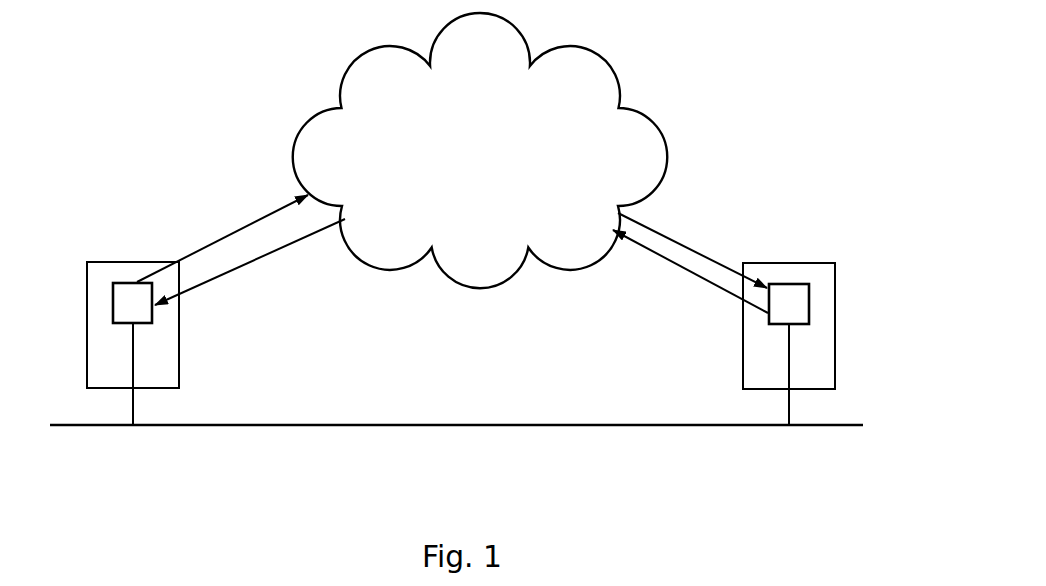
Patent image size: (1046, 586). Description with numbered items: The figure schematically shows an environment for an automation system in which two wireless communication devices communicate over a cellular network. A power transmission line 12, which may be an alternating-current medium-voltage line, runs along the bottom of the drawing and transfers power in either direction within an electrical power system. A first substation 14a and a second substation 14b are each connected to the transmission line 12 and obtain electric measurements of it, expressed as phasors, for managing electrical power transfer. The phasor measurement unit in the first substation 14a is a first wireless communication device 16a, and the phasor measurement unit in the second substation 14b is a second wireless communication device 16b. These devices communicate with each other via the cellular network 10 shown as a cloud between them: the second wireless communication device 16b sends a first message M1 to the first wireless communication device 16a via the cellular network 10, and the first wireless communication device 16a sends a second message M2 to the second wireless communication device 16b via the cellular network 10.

The cellular network 10 is at (501, 146).
The power transmission line 12 is at (528, 425).
The first substation 14a is at (108, 262).
The first wireless communication device 16a is at (153, 317).
The second substation 14b is at (802, 263).
The second wireless communication device 16b is at (809, 312).
The first message M1 is at (275, 253).
The second message M2 is at (242, 222).